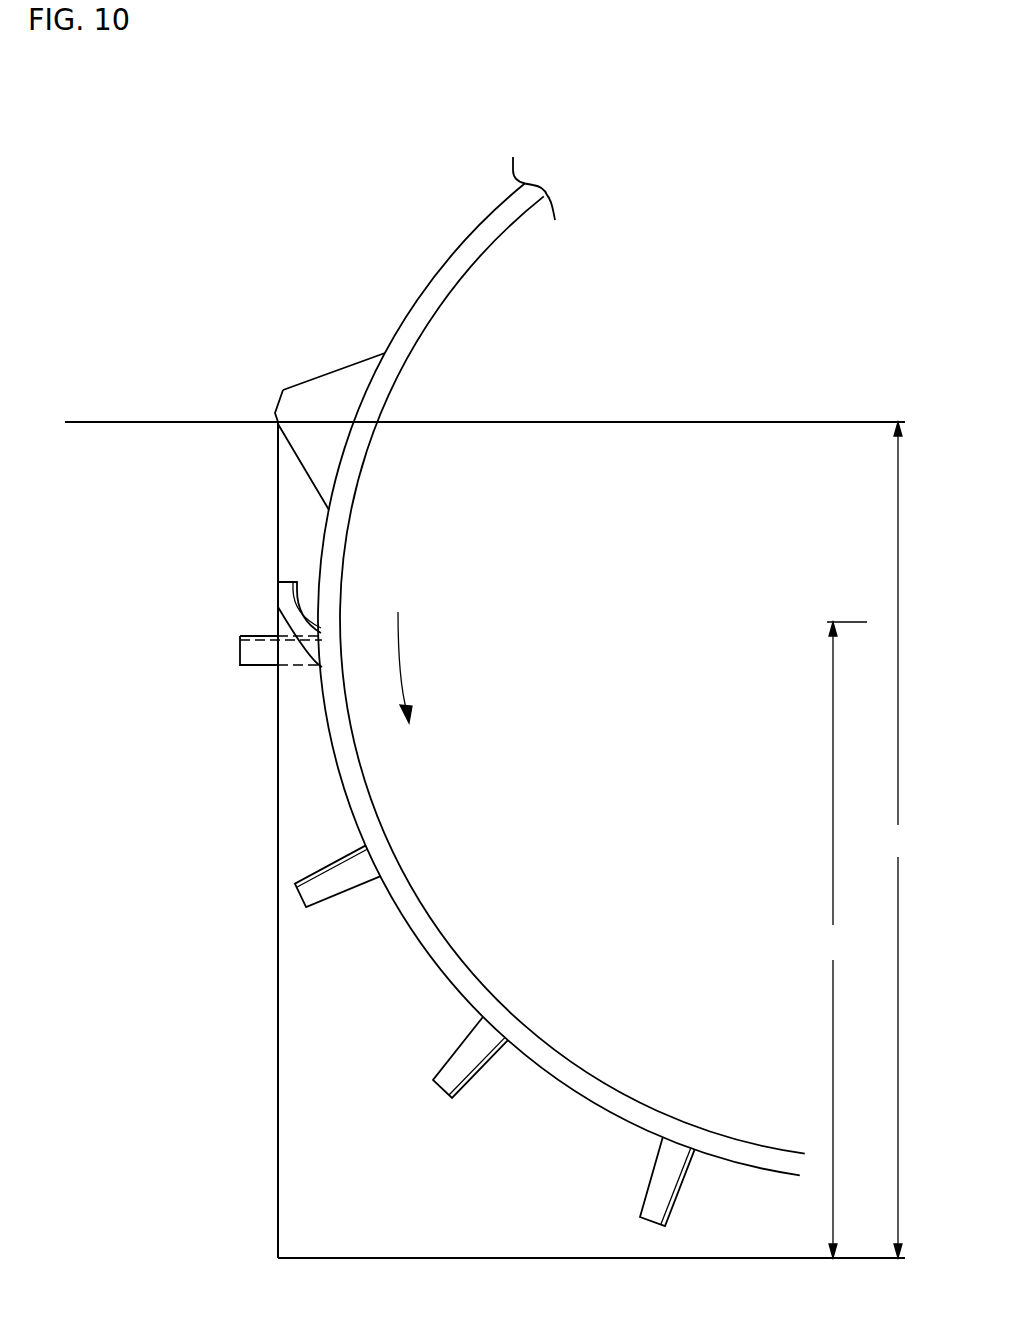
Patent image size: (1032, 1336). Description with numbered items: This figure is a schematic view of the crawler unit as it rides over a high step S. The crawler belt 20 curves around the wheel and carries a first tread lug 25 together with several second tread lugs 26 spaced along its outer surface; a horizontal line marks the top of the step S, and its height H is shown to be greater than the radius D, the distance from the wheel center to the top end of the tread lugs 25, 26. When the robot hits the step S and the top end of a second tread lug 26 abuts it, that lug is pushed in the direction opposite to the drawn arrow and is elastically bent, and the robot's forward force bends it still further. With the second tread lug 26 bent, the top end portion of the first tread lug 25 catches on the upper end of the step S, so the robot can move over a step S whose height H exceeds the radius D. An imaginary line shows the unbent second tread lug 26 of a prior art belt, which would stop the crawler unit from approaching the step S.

The crawler belt 20 is at (418, 265).
The first tread lug 25 is at (322, 374).
The second tread lug 26 is at (303, 592).
The step S is at (125, 457).
The height H is at (898, 840).
The radius D is at (846, 940).